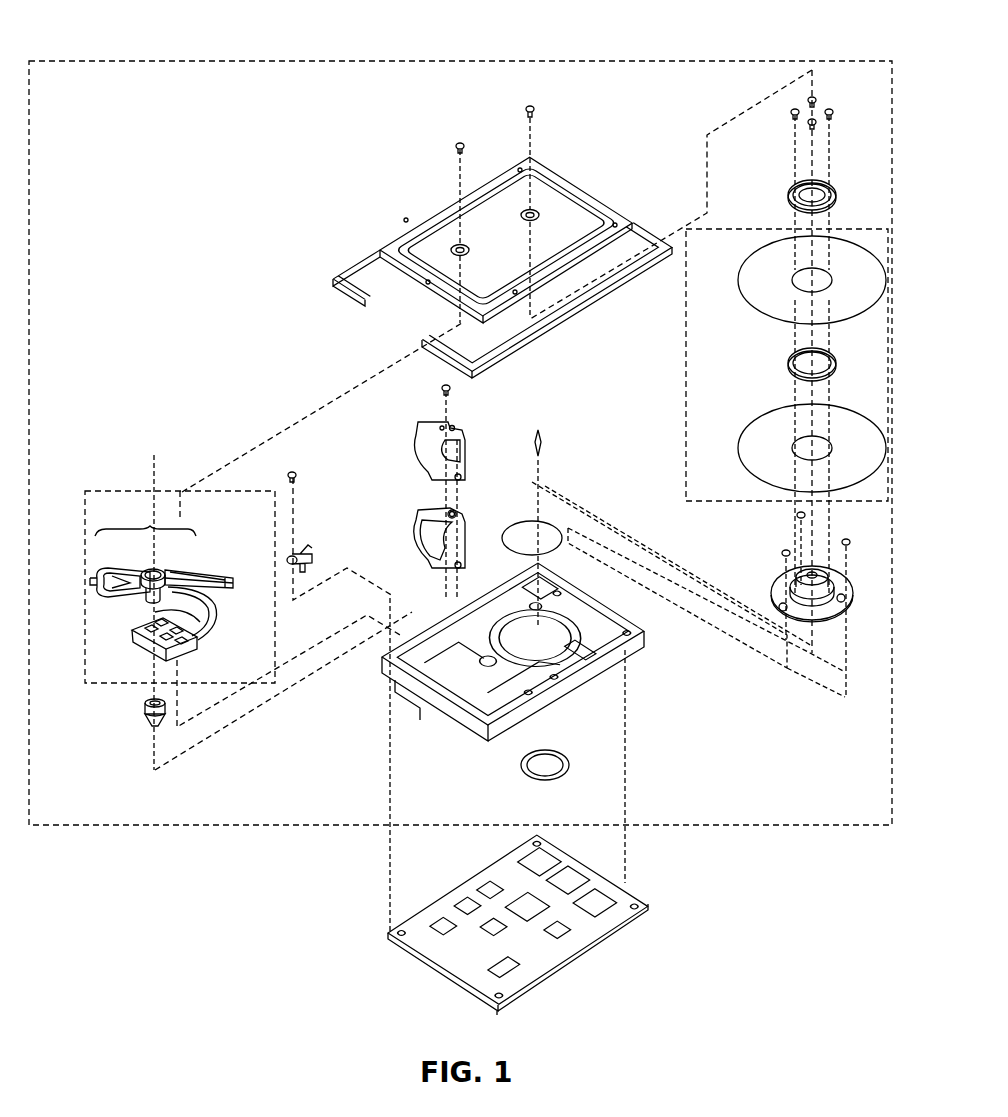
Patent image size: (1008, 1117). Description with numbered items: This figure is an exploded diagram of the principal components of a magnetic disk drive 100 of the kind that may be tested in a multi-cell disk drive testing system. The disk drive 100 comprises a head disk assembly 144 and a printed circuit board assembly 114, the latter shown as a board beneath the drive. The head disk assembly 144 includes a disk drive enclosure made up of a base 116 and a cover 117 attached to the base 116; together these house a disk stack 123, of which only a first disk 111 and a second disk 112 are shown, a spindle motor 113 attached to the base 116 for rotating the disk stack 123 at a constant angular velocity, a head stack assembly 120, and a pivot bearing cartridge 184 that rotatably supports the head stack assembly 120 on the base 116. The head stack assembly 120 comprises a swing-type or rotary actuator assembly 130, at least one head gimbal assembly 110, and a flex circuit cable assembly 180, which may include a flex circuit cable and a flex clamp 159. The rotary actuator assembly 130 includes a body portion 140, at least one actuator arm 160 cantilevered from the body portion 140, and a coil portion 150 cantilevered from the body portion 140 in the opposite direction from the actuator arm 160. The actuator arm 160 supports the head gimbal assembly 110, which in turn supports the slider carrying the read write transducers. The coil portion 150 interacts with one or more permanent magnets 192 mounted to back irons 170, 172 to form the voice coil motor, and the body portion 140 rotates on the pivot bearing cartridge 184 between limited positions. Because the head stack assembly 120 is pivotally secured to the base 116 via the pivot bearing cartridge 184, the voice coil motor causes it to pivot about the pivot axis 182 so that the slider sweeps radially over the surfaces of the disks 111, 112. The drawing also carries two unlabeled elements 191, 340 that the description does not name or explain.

The magnetic disk drive 100 is at (185, 46).
The head gimbal assembly 110 is at (208, 575).
The first disk 111 is at (752, 437).
The second disk 112 is at (752, 318).
The spindle motor 113 is at (782, 592).
The printed circuit board assembly 114 is at (573, 958).
The base 116 is at (628, 662).
The cover 117 is at (406, 236).
The head stack assembly 120 is at (118, 490).
The disk stack 123 is at (686, 356).
The rotary actuator assembly 130 is at (148, 526).
The body portion 140 is at (175, 570).
The head disk assembly 144 is at (776, 826).
The coil portion 150 is at (105, 592).
The flex clamp 159 is at (150, 645).
The actuator arm 160 is at (196, 590).
The back iron 170 is at (418, 448).
The back iron 172 is at (435, 512).
The flex circuit cable assembly 180 is at (194, 638).
The pivot axis 182 is at (160, 462).
The pivot bearing cartridge 184 is at (145, 712).
The screw 191 is at (458, 140).
The permanent magnet 192 is at (420, 540).
The pivot shaft 340 is at (143, 571).